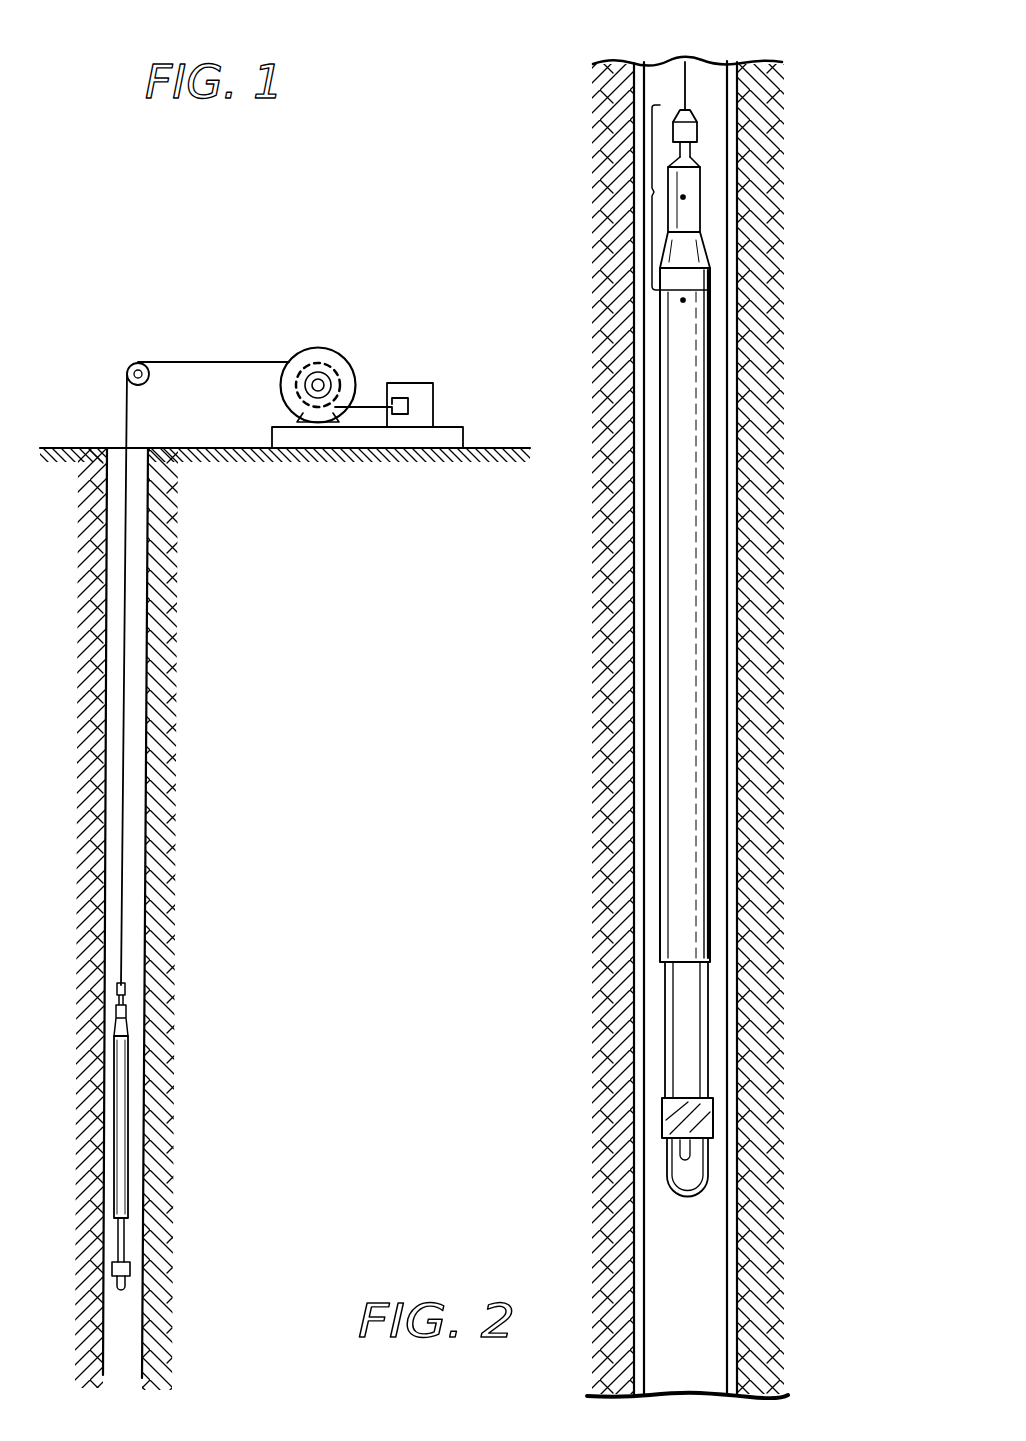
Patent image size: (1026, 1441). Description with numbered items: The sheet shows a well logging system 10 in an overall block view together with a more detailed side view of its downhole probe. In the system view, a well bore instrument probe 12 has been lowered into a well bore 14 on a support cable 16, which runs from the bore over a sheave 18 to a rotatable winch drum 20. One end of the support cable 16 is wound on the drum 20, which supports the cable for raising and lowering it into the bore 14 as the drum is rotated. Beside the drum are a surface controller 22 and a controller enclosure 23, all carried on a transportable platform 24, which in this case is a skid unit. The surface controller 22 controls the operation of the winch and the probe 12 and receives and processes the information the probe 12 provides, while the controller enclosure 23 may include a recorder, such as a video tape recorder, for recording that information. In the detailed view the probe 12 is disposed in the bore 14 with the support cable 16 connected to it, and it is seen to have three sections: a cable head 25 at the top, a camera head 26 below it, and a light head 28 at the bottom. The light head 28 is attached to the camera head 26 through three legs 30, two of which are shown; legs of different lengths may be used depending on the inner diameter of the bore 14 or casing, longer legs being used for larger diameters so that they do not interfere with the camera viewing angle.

In FIG. 1, the well logging system 10 is at (192, 290).
In FIG. 1, the well bore instrument probe 12 is at (128, 1129).
In FIG. 2, the well bore instrument probe 12 is at (678, 752).
In FIG. 1, the well bore 14 is at (147, 656).
In FIG. 2, the well bore 14 is at (722, 104).
In FIG. 1, the support cable 16 is at (127, 833).
In FIG. 2, the support cable 16 is at (670, 72).
In FIG. 1, the sheave 18 is at (134, 362).
In FIG. 1, the rotatable winch drum 20 is at (310, 349).
In FIG. 1, the surface controller 22 is at (398, 384).
In FIG. 1, the controller enclosure 23 is at (425, 383).
In FIG. 1, the transportable platform 24 is at (460, 427).
In FIG. 2, the cable head 25 is at (652, 192).
In FIG. 2, the camera head 26 is at (682, 532).
In FIG. 2, the light head 28 is at (700, 1120).
In FIG. 2, the legs 30 is at (665, 1028).